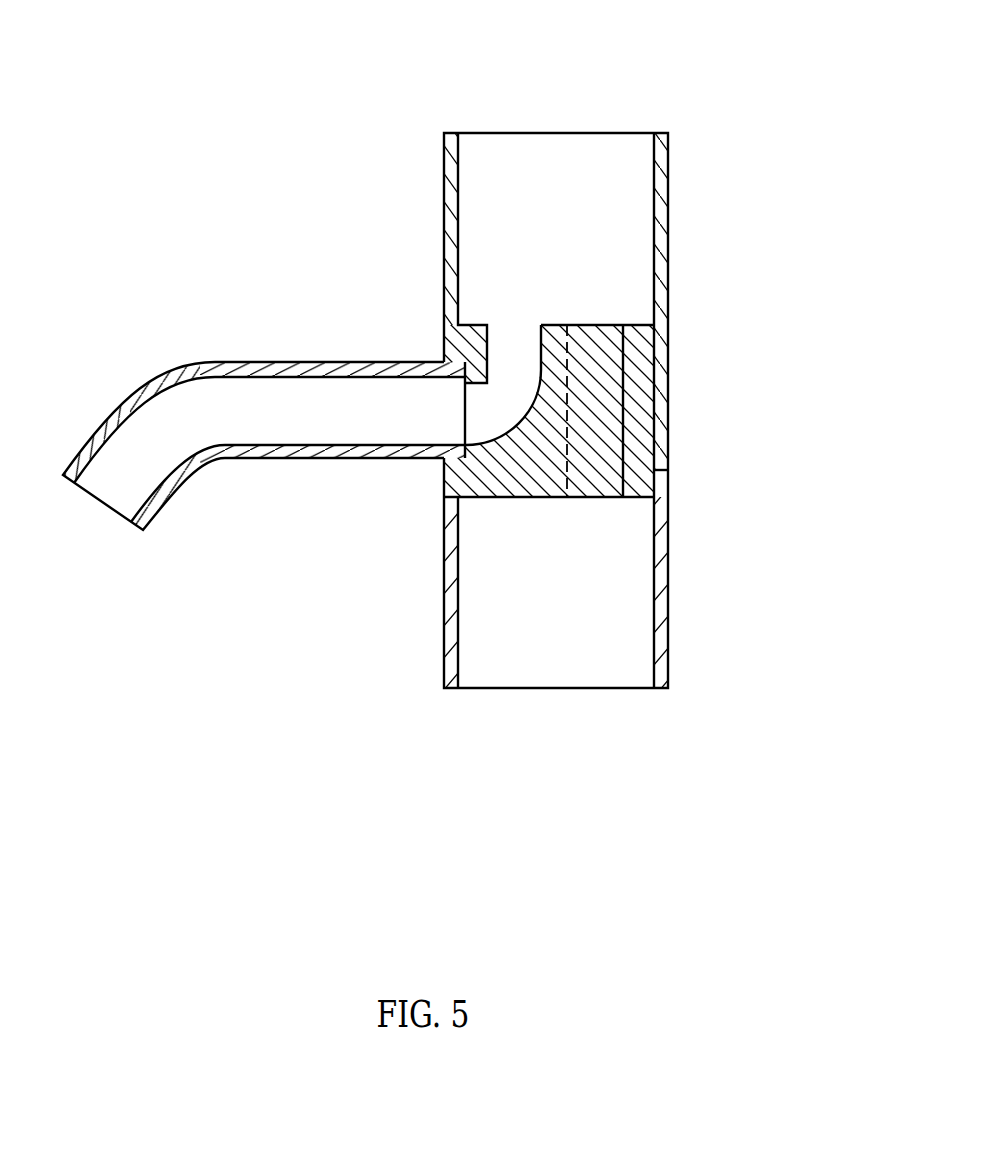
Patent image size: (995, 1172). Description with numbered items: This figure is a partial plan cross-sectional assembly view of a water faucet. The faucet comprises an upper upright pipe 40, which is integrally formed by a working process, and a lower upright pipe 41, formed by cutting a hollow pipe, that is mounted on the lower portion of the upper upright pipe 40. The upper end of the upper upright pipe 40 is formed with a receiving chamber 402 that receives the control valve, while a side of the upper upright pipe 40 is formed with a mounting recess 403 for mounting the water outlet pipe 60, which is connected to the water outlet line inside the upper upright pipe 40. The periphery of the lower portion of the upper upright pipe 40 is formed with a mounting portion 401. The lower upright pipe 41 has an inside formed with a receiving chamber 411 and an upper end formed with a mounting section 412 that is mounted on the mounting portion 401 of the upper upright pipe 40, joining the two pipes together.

The upper upright pipe 40 is at (444, 157).
The receiving chamber 402 is at (527, 147).
The mounting recess 403 is at (455, 360).
The mounting section 412 is at (655, 493).
The lower upright pipe 41 is at (668, 655).
The receiving chamber 411 is at (515, 665).
The mounting portion 401 is at (633, 498).
The water outlet pipe 60 is at (175, 492).